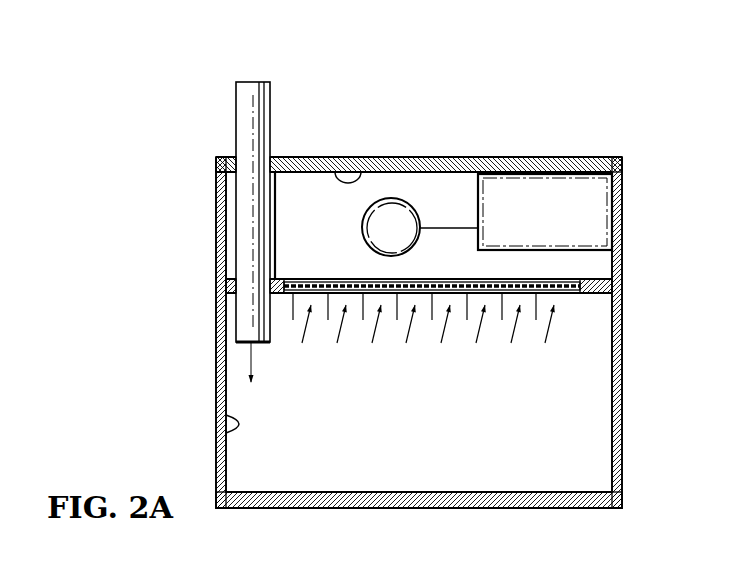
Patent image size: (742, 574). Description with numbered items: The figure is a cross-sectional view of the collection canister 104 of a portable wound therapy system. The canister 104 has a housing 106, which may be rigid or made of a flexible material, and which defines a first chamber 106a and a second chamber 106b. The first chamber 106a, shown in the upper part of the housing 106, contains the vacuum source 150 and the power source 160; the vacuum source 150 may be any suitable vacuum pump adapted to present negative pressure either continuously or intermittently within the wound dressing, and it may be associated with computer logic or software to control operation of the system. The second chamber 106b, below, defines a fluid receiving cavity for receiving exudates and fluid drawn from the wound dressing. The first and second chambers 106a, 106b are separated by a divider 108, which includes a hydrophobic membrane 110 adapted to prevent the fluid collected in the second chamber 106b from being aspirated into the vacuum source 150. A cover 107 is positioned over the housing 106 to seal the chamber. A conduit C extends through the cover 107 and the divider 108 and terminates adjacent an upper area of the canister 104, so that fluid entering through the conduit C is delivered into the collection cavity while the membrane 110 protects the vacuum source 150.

The collection canister 104 is at (444, 291).
The housing 106 is at (623, 365).
The first chamber 106a is at (362, 175).
The second chamber 106b is at (226, 430).
The cover 107 is at (518, 157).
The divider 108 is at (456, 248).
The hydrophobic membrane 110 is at (567, 278).
The vacuum source 150 is at (396, 213).
The power source 160 is at (575, 190).
The conduit C is at (245, 120).